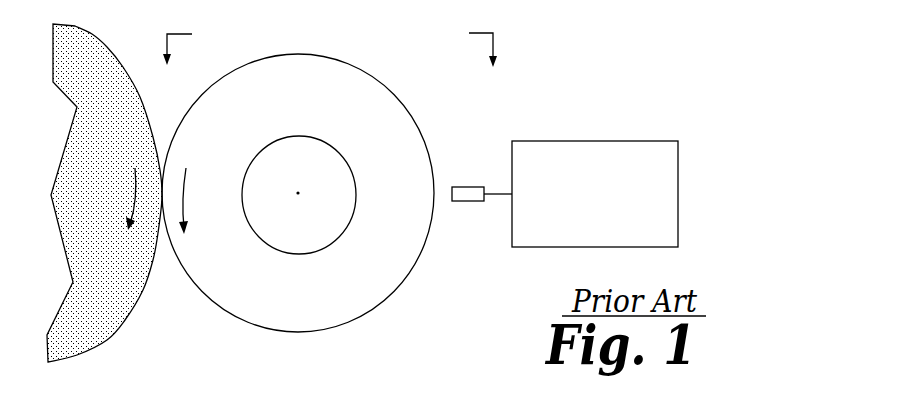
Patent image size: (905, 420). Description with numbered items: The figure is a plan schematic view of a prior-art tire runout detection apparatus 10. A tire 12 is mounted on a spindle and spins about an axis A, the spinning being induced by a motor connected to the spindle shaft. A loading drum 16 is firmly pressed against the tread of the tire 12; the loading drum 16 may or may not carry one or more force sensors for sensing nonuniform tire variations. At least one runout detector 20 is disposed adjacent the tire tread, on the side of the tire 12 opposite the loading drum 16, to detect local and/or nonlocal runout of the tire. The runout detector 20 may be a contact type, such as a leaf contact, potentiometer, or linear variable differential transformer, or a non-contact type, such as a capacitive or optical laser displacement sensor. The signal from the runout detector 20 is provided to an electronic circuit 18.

The tire runout detection apparatus 10 is at (626, 49).
The tire 12 is at (298, 228).
The loading drum 16 is at (105, 335).
The electronic circuit 18 is at (648, 141).
The runout detector 20 is at (471, 168).
The axis A is at (298, 193).